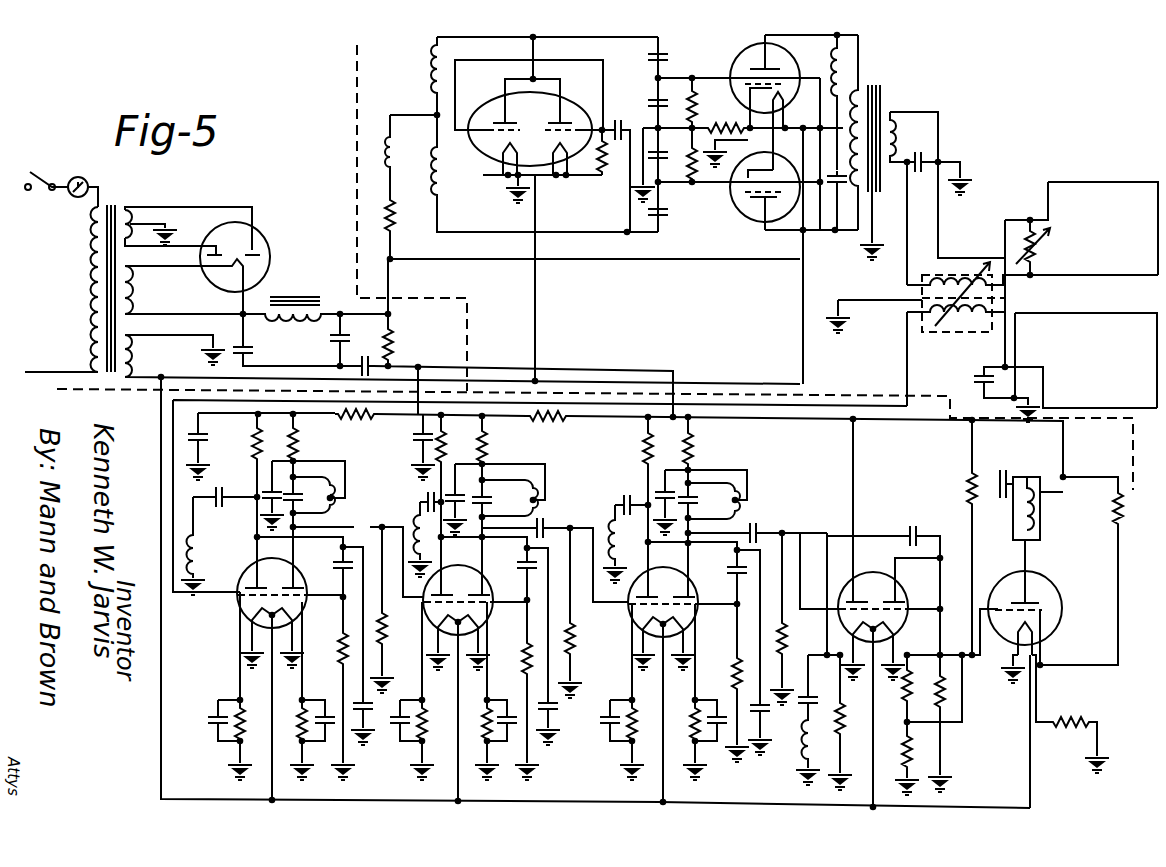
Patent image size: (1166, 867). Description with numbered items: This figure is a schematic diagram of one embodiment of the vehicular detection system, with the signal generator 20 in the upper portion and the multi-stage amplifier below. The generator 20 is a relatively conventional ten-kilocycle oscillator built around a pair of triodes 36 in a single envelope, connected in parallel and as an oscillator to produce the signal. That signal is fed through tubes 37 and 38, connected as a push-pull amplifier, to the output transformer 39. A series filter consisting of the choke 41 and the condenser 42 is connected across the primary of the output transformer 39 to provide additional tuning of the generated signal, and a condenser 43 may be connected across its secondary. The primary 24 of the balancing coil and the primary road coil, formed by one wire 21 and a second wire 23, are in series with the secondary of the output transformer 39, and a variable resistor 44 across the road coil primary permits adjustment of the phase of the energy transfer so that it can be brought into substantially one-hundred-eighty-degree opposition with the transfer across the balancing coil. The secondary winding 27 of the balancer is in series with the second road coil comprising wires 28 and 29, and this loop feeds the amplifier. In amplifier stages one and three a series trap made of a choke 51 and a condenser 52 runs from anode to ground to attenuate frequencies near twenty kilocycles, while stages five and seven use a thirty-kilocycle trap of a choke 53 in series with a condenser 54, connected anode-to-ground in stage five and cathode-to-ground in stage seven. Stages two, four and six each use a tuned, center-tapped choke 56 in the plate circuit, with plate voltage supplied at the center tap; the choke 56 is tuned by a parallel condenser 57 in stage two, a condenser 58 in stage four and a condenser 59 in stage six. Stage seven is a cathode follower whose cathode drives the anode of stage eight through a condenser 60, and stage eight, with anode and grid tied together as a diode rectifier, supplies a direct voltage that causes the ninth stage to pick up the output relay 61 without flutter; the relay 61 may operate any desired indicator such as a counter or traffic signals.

The generator 20 is at (604, 272).
The one wire of primary road coil 21 is at (1086, 182).
The second wire of primary road coil 23 is at (1086, 278).
The primary of balancing coil 24 is at (934, 278).
The secondary winding of balancer 27 is at (968, 330).
The wire of second road coil 28 is at (1088, 313).
The wire of second road coil 29 is at (1104, 406).
The pair of triodes 36 is at (480, 152).
The tube 37 is at (732, 58).
The tube 38 is at (735, 205).
The output transformer 39 is at (880, 100).
The choke 41 is at (846, 66).
The condenser 42 is at (841, 200).
The condenser 43 is at (932, 156).
The variable resistor 44 is at (1036, 249).
The choke 51 is at (198, 546).
The condenser 52 is at (420, 500).
The choke 53 is at (612, 522).
The condenser 54 is at (626, 498).
The choke 56 is at (334, 508).
The condenser 57 is at (300, 492).
The condenser 58 is at (489, 495).
The condenser 59 is at (695, 495).
The condenser 60 is at (914, 534).
The output relay 61 is at (1042, 521).